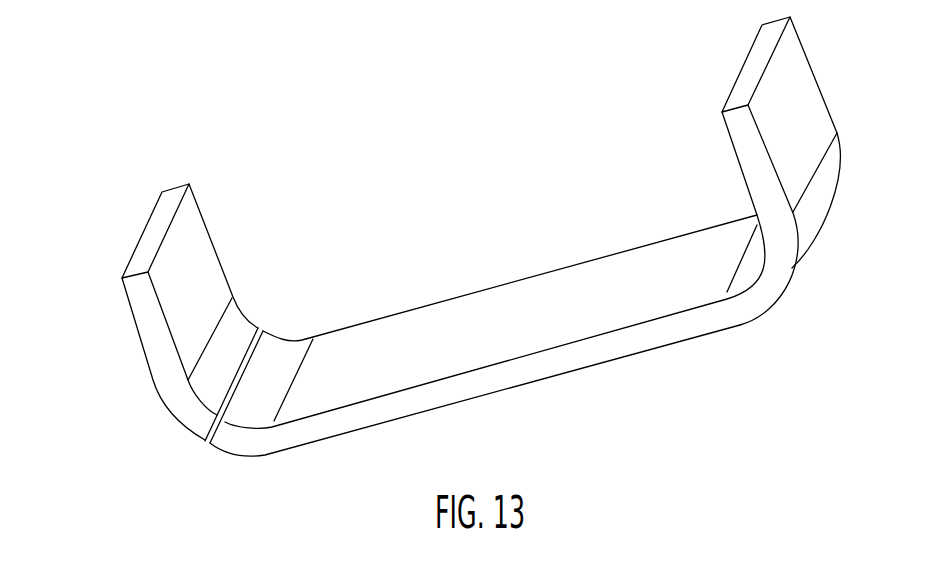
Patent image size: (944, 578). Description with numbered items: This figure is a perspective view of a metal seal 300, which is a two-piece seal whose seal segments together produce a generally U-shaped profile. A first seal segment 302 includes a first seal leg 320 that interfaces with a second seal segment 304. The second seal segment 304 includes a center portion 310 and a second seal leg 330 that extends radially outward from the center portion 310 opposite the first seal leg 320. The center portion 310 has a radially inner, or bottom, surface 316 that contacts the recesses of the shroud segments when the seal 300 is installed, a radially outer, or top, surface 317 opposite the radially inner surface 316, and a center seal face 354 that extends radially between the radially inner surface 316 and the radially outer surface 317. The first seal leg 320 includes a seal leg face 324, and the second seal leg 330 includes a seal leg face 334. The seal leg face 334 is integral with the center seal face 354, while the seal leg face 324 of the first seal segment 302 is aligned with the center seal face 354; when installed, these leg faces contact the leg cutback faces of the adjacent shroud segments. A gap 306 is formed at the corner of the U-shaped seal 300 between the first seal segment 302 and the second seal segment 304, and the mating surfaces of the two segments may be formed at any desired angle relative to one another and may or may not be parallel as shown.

The metal seal 300 is at (212, 100).
The first seal segment 302 is at (238, 236).
The second seal segment 304 is at (578, 207).
The gap 306 is at (266, 316).
The center portion 310 is at (545, 280).
The radially inner surface 316 is at (450, 404).
The radially outer surface 317 is at (437, 330).
The first seal leg 320 is at (115, 322).
The seal leg face 324 is at (167, 378).
The second seal leg 330 is at (713, 147).
The seal leg face 334 is at (762, 185).
The center seal face 354 is at (620, 343).